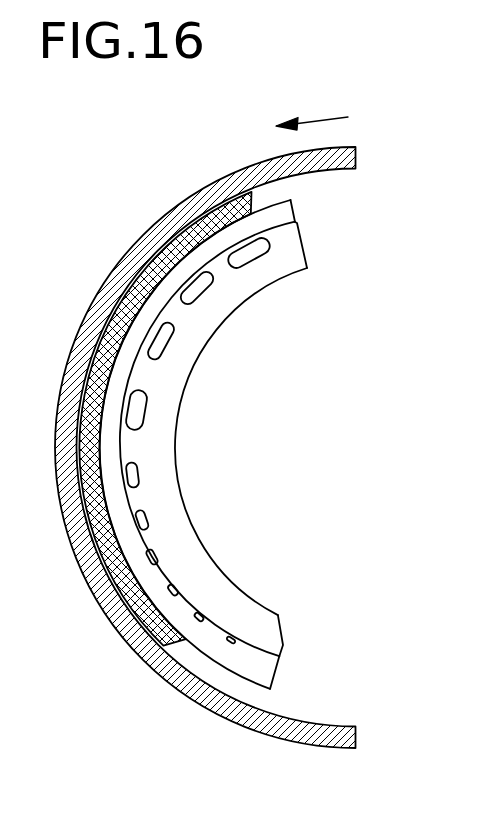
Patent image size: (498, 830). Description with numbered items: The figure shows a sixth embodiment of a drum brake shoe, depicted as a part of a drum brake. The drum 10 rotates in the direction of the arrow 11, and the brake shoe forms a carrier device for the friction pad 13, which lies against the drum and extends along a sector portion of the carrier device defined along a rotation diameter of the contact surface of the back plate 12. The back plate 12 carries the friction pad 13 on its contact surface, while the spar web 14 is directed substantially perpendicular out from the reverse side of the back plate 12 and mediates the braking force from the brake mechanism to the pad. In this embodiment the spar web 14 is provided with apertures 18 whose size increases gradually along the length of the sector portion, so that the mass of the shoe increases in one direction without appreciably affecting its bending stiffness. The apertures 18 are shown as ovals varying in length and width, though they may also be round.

The drum 10 is at (340, 725).
The arrow 11 is at (329, 115).
The back plate 12 is at (266, 656).
The friction pad 13 is at (142, 646).
The spar web 14 is at (302, 232).
The apertures 18 is at (144, 418).